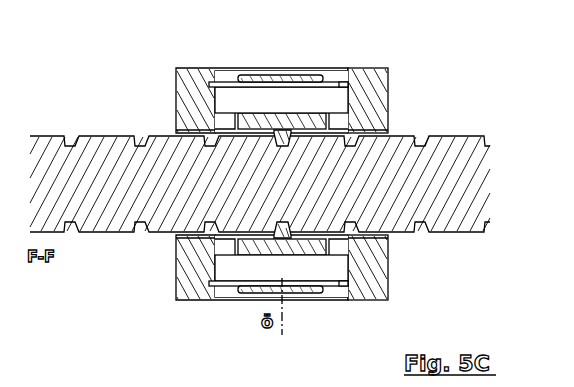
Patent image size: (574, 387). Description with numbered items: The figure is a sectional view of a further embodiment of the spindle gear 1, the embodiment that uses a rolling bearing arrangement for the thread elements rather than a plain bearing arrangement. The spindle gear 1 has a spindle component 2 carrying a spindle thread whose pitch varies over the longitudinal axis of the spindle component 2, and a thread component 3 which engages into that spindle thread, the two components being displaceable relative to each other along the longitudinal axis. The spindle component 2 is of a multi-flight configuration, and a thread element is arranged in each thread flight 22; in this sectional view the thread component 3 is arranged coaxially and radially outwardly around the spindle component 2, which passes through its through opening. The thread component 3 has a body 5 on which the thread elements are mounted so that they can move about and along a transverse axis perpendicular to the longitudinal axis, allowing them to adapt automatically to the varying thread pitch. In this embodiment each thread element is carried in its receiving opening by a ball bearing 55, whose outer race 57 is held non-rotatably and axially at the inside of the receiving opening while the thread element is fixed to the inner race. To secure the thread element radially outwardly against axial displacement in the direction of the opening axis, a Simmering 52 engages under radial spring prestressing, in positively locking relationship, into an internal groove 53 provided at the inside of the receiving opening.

The spindle gear 1 is at (284, 158).
The spindle component 2 is at (451, 133).
The thread component 3 is at (198, 64).
The body 5 is at (397, 97).
The thread flight 22 is at (147, 233).
The Simmering 52 is at (337, 83).
The internal groove 53 is at (344, 86).
The ball bearing 55 is at (333, 80).
The outer race 57 is at (313, 96).